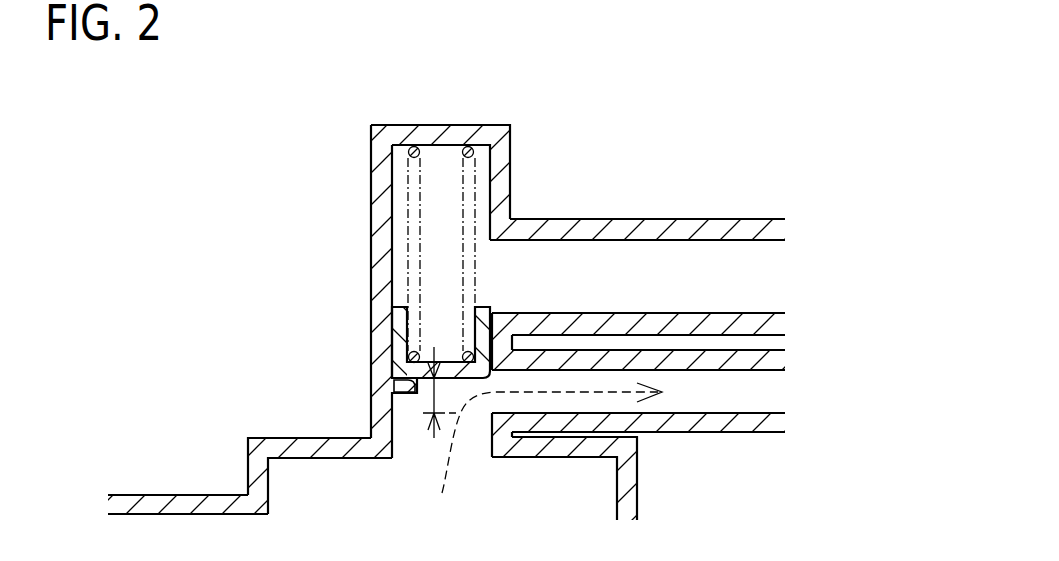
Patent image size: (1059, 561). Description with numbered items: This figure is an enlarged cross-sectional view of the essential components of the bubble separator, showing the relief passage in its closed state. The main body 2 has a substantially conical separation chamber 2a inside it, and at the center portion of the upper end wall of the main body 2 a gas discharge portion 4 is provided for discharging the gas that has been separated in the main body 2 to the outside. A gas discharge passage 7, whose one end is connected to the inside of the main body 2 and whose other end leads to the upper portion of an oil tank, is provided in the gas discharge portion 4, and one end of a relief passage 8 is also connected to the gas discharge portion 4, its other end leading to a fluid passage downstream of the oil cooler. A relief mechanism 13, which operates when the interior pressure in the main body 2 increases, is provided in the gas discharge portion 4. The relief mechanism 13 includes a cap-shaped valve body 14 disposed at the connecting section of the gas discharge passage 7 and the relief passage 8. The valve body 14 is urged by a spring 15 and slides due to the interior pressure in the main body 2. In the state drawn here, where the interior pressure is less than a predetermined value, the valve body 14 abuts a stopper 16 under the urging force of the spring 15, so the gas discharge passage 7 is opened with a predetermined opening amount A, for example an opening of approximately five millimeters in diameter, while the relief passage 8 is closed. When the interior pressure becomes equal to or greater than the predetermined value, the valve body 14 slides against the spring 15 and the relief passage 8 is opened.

The main body 2 is at (262, 471).
The separation chamber 2a is at (301, 474).
The gas discharge portion 4 is at (372, 293).
The gas discharge passage 7 is at (728, 380).
The relief passage 8 is at (613, 276).
The relief mechanism 13 is at (348, 229).
The valve body 14 is at (398, 321).
The spring 15 is at (405, 181).
The stopper 16 is at (400, 392).
The opening amount A is at (431, 391).